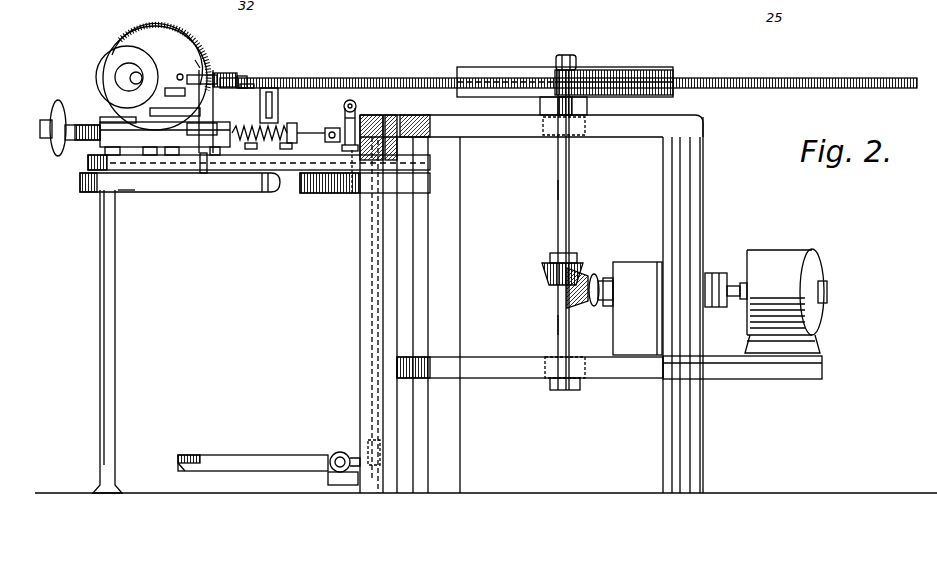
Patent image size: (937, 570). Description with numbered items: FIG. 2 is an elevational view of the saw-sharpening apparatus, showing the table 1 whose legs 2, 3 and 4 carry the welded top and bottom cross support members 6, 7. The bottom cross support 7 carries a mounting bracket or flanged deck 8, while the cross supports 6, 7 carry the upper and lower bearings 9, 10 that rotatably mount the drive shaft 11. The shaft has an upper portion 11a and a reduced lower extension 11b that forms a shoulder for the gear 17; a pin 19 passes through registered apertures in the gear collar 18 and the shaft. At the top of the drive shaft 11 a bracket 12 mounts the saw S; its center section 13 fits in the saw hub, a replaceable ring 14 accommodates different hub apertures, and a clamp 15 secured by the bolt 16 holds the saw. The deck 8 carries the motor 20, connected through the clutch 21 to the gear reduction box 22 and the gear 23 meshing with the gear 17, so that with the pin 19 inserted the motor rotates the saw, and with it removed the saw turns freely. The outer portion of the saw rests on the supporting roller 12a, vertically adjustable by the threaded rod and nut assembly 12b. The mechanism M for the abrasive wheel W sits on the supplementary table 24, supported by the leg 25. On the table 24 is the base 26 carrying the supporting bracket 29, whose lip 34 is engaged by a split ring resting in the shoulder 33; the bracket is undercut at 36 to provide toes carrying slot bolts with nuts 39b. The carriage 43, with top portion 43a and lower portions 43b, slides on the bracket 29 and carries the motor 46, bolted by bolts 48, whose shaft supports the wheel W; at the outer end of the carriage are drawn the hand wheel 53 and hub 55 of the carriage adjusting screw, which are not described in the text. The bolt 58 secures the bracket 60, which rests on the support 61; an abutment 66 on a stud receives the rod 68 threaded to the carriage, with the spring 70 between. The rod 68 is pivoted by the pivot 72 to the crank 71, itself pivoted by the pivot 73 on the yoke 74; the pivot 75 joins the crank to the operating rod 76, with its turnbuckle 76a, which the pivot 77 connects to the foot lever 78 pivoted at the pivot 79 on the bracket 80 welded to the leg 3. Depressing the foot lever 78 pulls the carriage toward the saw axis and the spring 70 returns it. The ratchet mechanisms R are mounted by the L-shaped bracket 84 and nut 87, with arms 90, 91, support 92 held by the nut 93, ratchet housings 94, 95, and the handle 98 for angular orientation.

The table 1 is at (712, 157).
The leg 2 is at (697, 197).
The leg 3 is at (360, 320).
The leg 4 is at (450, 214).
The top cross support member 6 is at (494, 137).
The bottom cross support member 7 is at (486, 378).
The mounting bracket or flanged deck 8 is at (736, 378).
The upper bearing 9 is at (585, 136).
The lower bearing 10 is at (587, 378).
The drive shaft 11 is at (574, 218).
The upper portion 11a is at (557, 190).
The lower extension 11b is at (557, 323).
The bracket 12 is at (588, 108).
The supporting roller 12a is at (250, 85).
The threaded rod and nut assembly 12b is at (276, 193).
The center section 13 is at (599, 80).
The replaceable ring 14 is at (624, 79).
The clamp 15 is at (500, 67).
The bolt 16 is at (576, 58).
The gear 17 is at (545, 273).
The gear collar 18 is at (550, 257).
The pin 19 is at (581, 272).
The motor 20 is at (796, 252).
The clutch 21 is at (722, 273).
The gear reduction box 22 is at (632, 308).
The gear 23 is at (587, 308).
The supplementary table 24 is at (85, 180).
The leg 25 is at (100, 340).
The base 26 is at (95, 163).
The supporting bracket 29 is at (112, 152).
The shoulder 33 is at (836, 6).
The lip 34 is at (806, 21).
The undercut 36 is at (176, 158).
The nut 39b is at (150, 158).
The carriage 43 is at (113, 141).
The top portion 43a is at (165, 134).
The lower portions 43b is at (112, 140).
The motor 46 is at (115, 47).
The bolts 48 is at (143, 113).
The hand wheel 53 is at (55, 110).
The hub 55 is at (40, 128).
The bolt 58 is at (268, 149).
The bracket 60 is at (330, 175).
The support 61 is at (352, 182).
The abutment 66 is at (292, 122).
The rod 68 is at (310, 131).
The spring 70 is at (262, 110).
The crank 71 is at (347, 100).
The pivot 72 is at (330, 136).
The pivot 73 is at (355, 100).
The yoke 74 is at (356, 115).
The pivot 75 is at (385, 112).
The operating rod 76 is at (368, 228).
The turnbuckle 76a is at (372, 280).
The pivot 77 is at (376, 495).
The foot lever 78 is at (245, 455).
The pivot 79 is at (340, 452).
The bracket 80 is at (335, 485).
The L-shaped bracket 84 is at (128, 192).
The nut 87 is at (215, 158).
The arm 90 is at (214, 118).
The arm 91 is at (238, 80).
The support 92 is at (180, 93).
The nut 93 is at (203, 172).
The ratchet housing 94 is at (218, 73).
The ratchet housing 95 is at (176, 75).
The handle 98 is at (129, 77).
The mechanism for mounting the abrasive wheel M is at (93, 75).
The ratchet mechanisms R is at (190, 38).
The saw S is at (760, 80).
The abrasive wheel W is at (200, 62).